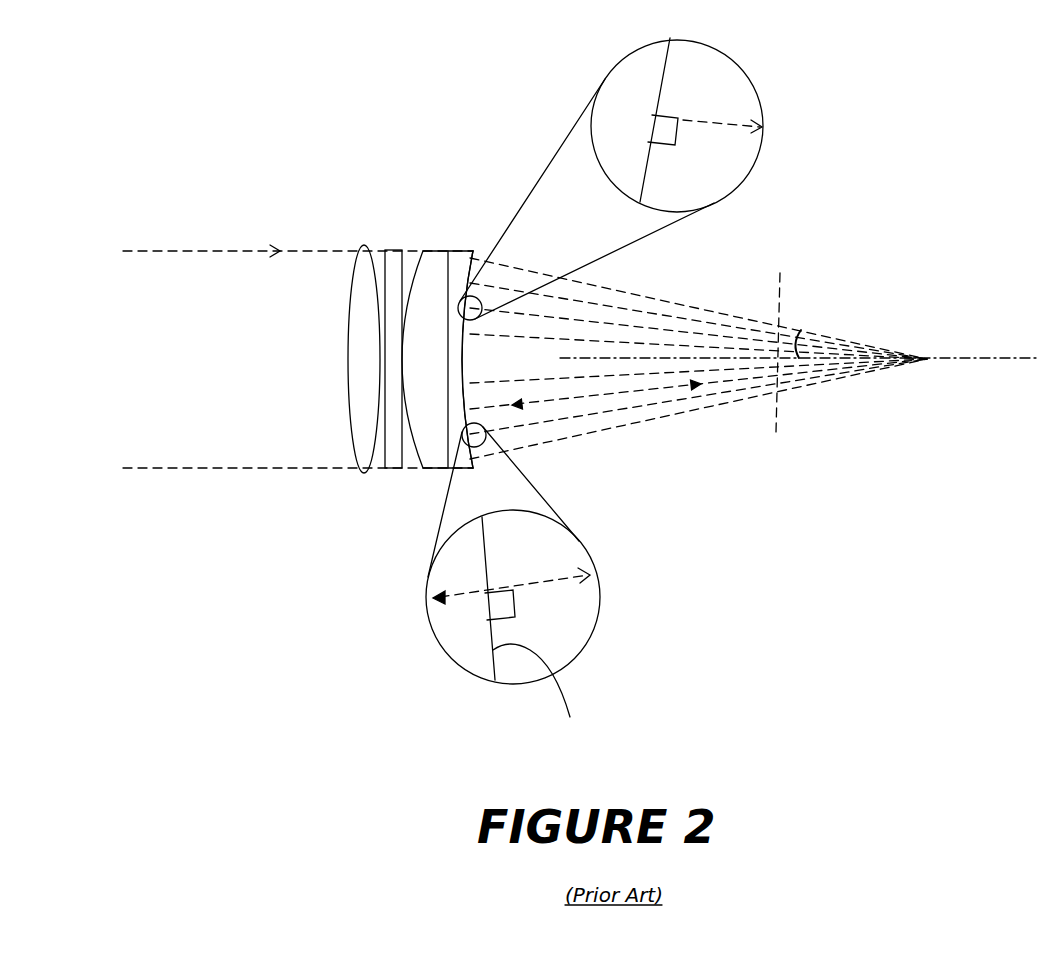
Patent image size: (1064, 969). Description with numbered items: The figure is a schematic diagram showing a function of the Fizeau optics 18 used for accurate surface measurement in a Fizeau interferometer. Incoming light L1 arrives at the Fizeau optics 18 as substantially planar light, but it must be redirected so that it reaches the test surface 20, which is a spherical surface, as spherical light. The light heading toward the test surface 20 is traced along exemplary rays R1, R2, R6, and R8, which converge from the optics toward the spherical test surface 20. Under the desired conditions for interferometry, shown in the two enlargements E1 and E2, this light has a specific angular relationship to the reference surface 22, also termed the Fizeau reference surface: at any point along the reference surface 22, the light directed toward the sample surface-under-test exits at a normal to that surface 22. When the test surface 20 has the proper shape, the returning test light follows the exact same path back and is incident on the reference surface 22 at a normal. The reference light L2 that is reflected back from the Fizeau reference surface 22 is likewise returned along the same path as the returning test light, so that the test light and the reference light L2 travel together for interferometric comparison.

The Fizeau optics 18 is at (356, 152).
The test surface 20 is at (776, 423).
The reference surface 22 is at (463, 372).
The incoming light L1 is at (262, 251).
The reference light L2 is at (465, 593).
The enlargement E1 is at (626, 161).
The enlargement E2 is at (509, 558).
The exemplary ray R1 is at (558, 443).
The exemplary ray R2 is at (552, 582).
The exemplary ray R6 is at (717, 122).
The exemplary ray R8 is at (673, 298).